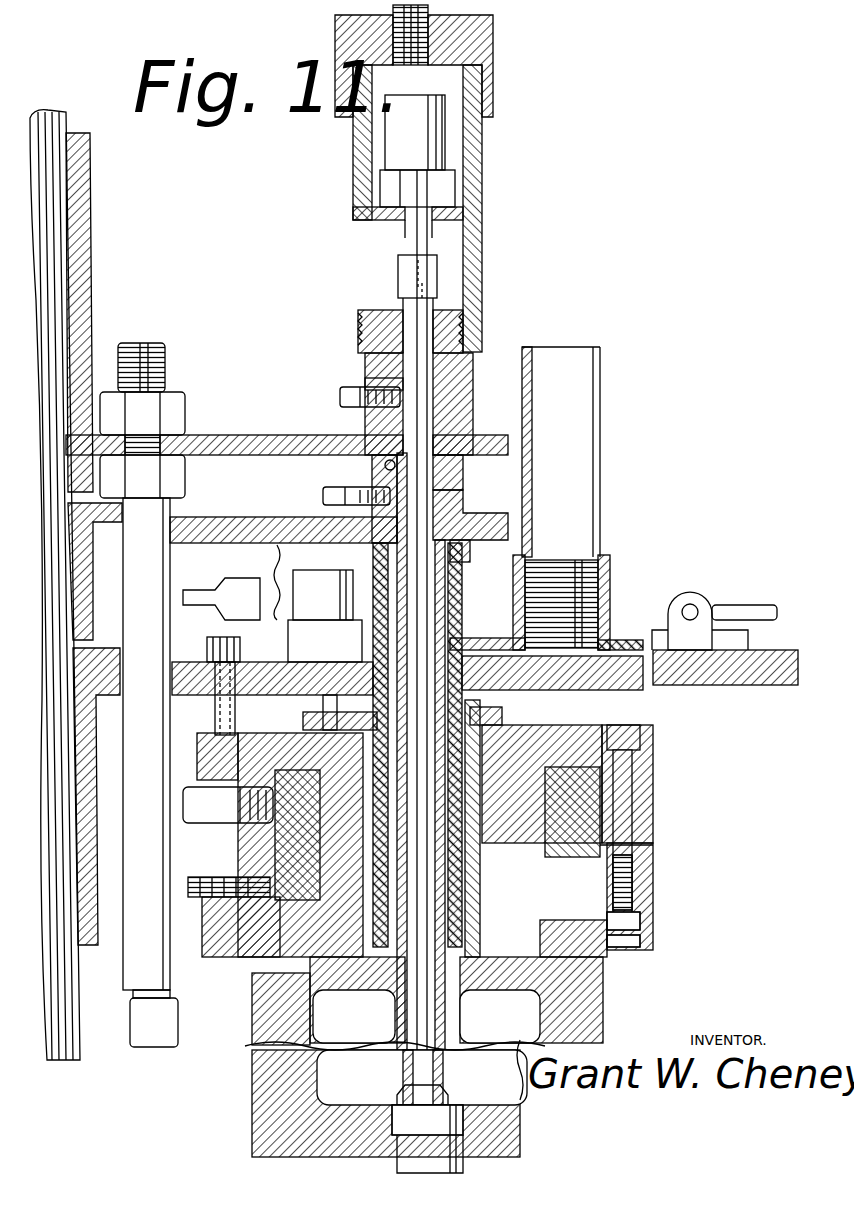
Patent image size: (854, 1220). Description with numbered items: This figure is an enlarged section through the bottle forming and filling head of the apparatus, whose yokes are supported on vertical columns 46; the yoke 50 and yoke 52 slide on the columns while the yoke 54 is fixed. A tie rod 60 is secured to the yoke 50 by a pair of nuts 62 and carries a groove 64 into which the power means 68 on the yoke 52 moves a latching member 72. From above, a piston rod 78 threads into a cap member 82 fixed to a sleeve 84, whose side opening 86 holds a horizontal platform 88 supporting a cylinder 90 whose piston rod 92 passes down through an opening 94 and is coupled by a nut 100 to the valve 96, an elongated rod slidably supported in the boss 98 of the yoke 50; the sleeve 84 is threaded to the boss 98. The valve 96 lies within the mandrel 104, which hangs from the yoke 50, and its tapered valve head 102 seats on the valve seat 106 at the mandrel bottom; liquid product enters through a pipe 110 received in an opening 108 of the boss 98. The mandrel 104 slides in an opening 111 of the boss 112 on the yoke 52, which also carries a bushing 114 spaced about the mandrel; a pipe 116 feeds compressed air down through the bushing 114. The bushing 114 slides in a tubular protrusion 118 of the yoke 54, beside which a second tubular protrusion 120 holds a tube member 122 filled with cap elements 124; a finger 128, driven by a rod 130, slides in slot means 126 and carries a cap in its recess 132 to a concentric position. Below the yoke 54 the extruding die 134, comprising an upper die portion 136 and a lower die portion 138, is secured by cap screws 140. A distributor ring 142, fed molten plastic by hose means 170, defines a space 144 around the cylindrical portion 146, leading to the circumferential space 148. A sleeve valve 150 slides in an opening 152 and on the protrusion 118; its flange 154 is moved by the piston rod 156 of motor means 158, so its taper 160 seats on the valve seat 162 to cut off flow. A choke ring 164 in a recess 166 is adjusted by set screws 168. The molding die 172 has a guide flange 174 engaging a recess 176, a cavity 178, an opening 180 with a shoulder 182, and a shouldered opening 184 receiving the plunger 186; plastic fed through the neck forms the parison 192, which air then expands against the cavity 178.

The column 46 is at (105, 105).
The yoke 50 is at (240, 435).
The yoke 52 is at (245, 510).
The yoke 54 is at (630, 688).
The tie rod 60 is at (160, 585).
The nuts 62 is at (175, 410).
The groove 64 is at (133, 1000).
The cylinder and piston assemblage 68 is at (268, 560).
The latching member 72 is at (210, 605).
The piston rod 78 is at (428, 10).
The cap member 82 is at (493, 42).
The sleeve 84 is at (482, 190).
The opening 86 is at (385, 308).
The platform 88 is at (380, 205).
The cylinder 90 is at (440, 146).
The piston rod 92 is at (430, 240).
The opening 94 is at (405, 228).
The valve 96 is at (433, 305).
The boss 98 is at (470, 398).
The nut 100 is at (437, 270).
The valve head 102 is at (400, 1080).
The mandrel 104 is at (450, 510).
The valve seat 106 is at (448, 1090).
The opening 108 is at (368, 388).
The pipe 110 is at (350, 400).
The opening 111 is at (385, 465).
The boss 112 is at (463, 466).
The bushing 114 is at (462, 600).
The pipe 116 is at (330, 497).
The tubular protrusion 118 is at (462, 580).
The tubular protrusion 120 is at (610, 560).
The tube member 122 is at (600, 490).
The cap elements 124 is at (575, 560).
The slot means 126 is at (505, 626).
The finger 128 is at (655, 632).
The rod 130 is at (745, 605).
The recess 132 is at (615, 640).
The extruding die 134 is at (662, 825).
The upper die portion 136 is at (653, 775).
The lower die portion 138 is at (655, 900).
The cap screws 140 is at (242, 648).
The distributor ring 142 is at (585, 760).
The space 144 is at (285, 770).
The cylindrical portion 146 is at (255, 1000).
The space 148 is at (640, 920).
The sleeve valve 150 is at (530, 735).
The opening 152 is at (653, 846).
The flange 154 is at (335, 725).
The piston rod 156 is at (323, 705).
The motor means 158 is at (305, 580).
The taper 160 is at (590, 950).
The valve seat 162 is at (345, 980).
The choke ring 164 is at (240, 960).
The recess 166 is at (632, 880).
The set screws 168 is at (225, 900).
The hose means 170 is at (215, 822).
The molding die 172 is at (603, 995).
The guide flange 174 is at (252, 1060).
The recess 176 is at (640, 942).
The cavity 178 is at (316, 1028).
The opening 180 is at (465, 992).
The shoulder 182 is at (378, 985).
The shouldered opening 184 is at (395, 1130).
The plunger 186 is at (463, 1165).
The parison 192 is at (397, 1058).